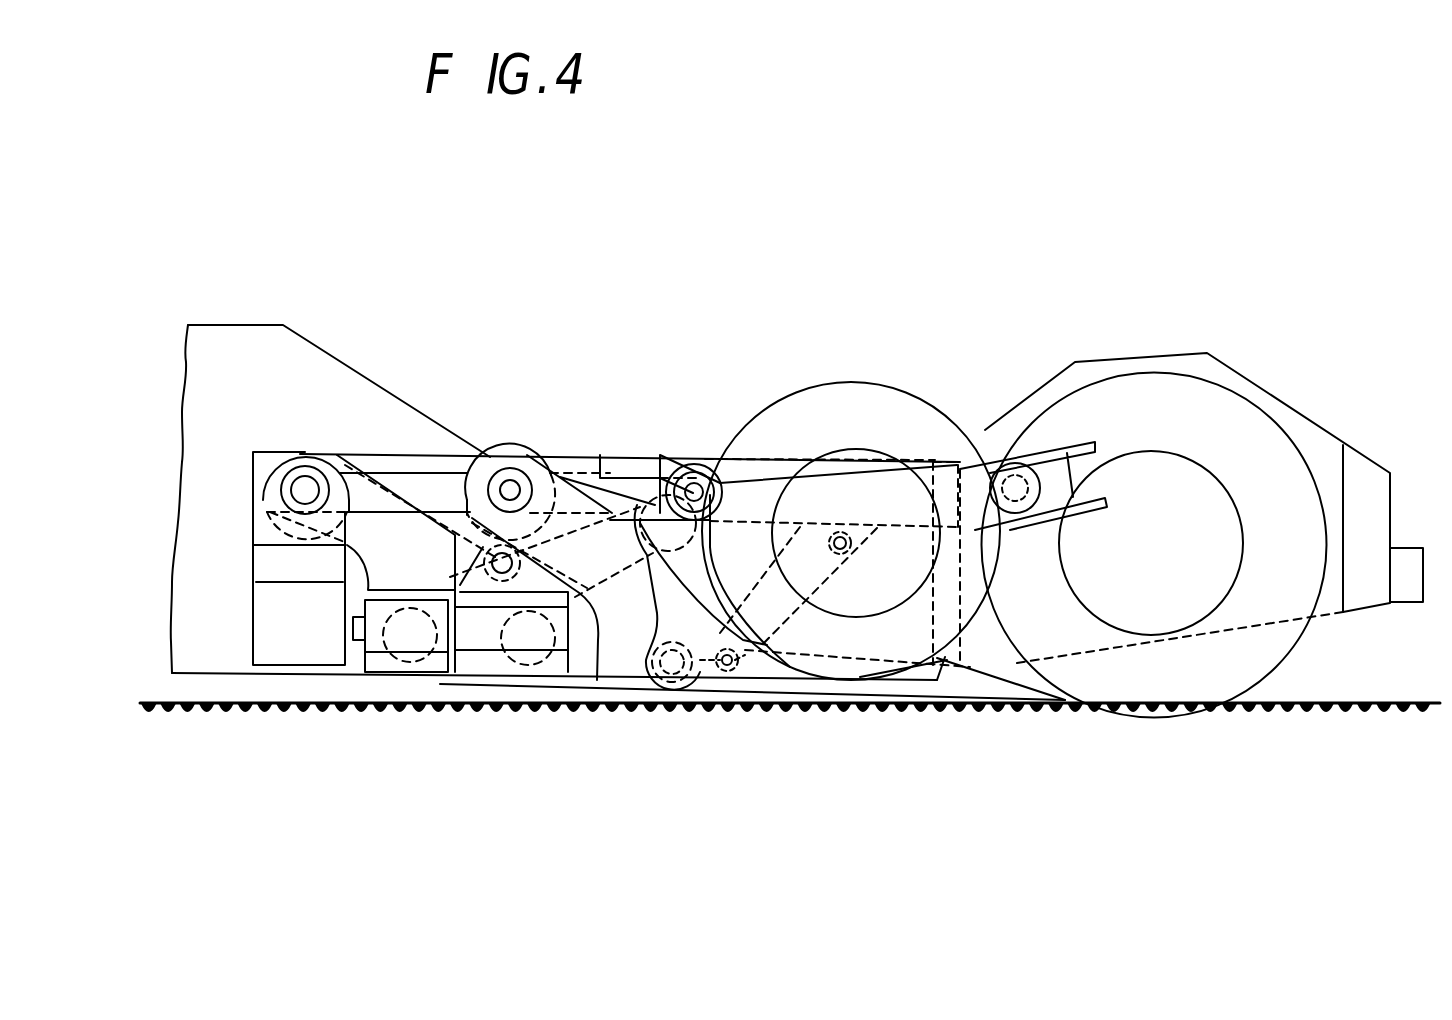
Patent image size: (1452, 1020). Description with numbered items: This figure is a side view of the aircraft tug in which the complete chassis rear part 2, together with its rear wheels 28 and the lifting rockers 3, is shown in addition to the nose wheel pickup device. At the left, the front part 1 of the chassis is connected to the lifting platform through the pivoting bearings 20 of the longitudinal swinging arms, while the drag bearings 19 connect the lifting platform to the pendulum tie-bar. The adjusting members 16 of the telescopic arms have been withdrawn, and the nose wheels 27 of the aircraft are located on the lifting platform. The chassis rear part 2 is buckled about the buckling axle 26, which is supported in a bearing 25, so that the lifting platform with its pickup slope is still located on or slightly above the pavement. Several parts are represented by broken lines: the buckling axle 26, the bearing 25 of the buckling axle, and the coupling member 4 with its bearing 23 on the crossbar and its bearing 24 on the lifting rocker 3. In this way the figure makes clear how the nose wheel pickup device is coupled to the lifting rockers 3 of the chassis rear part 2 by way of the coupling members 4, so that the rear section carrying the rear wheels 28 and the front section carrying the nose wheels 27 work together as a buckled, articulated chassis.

The front part of the chassis 1 is at (277, 630).
The chassis rear part 2 is at (1325, 458).
The lifting rocker 3 is at (1204, 482).
The coupling member 4 is at (618, 545).
The adjusting member 16 is at (771, 618).
The drag bearing 19 is at (528, 638).
The pivoting bearing 20 is at (510, 490).
The bearing on the crossbar 23 is at (410, 635).
The bearing on the lifting rocker 24 is at (658, 508).
The bearing of the buckling axle 25 is at (670, 660).
The buckling axle 26 is at (722, 660).
The nose wheel 27 is at (797, 427).
The rear wheel 28 is at (1137, 678).